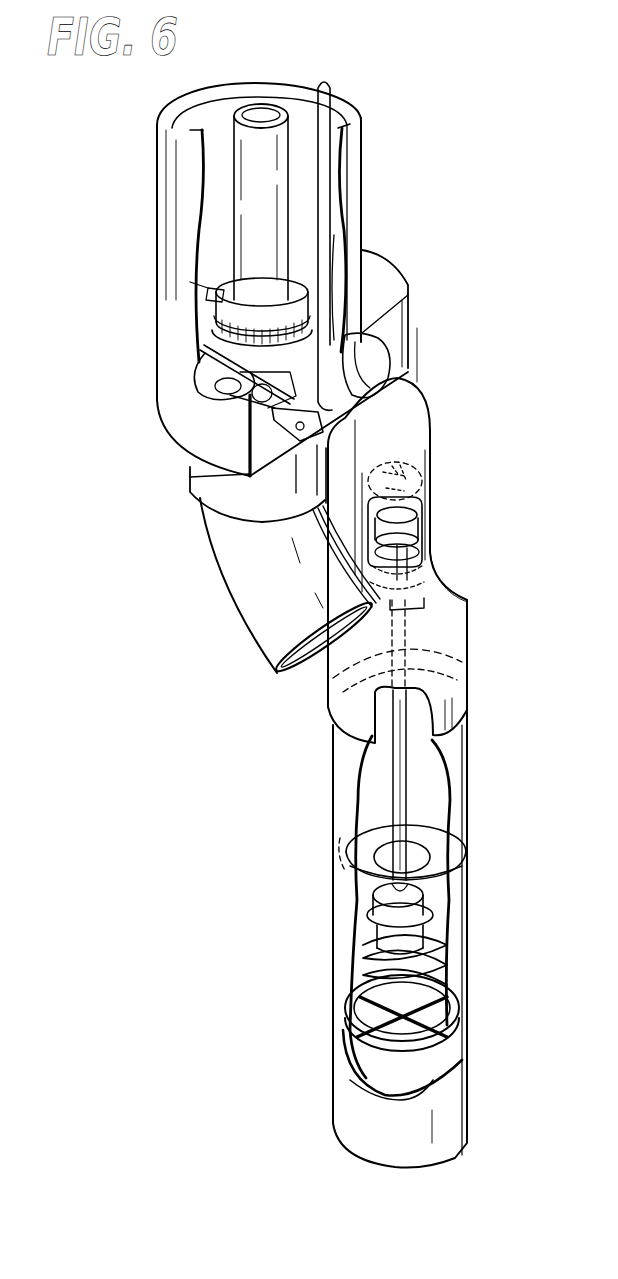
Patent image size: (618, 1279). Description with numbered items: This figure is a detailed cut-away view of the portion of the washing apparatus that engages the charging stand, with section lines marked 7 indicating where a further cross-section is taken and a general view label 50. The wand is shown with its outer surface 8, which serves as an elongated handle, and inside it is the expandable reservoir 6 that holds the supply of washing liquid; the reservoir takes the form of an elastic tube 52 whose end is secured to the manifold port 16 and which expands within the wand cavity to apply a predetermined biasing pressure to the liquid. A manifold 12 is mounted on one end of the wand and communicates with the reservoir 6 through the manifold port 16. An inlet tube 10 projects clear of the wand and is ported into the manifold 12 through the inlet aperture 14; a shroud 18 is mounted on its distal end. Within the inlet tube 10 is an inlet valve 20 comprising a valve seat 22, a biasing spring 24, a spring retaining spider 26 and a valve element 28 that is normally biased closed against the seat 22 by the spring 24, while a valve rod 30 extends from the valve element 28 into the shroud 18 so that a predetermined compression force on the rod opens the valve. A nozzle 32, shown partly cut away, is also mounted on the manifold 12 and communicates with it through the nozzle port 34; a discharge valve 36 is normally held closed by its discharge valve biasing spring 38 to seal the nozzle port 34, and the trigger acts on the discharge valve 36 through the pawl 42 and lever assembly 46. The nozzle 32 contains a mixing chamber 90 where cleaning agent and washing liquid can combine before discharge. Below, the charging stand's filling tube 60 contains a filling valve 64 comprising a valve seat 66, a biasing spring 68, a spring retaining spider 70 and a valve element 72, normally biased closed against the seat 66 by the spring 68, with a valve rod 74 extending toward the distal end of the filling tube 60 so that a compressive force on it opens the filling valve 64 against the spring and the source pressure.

The expandable reservoir 6 is at (212, 216).
The section line 7- 7 is at (457, 290).
The outer surface 8 is at (160, 180).
The inlet tube 10 is at (405, 448).
The manifold 12 is at (386, 270).
The inlet aperture 14 is at (365, 370).
The manifold port 16 is at (214, 293).
The shroud 18 is at (468, 645).
The inlet valve 20 is at (478, 553).
The valve seat 22 is at (455, 598).
The biasing spring 24 is at (428, 507).
The spring retaining spider 26 is at (420, 478).
The valve element 28 is at (420, 549).
The valve rod 30 is at (403, 606).
The nozzle 32 is at (265, 628).
The nozzle port 34 is at (245, 403).
The discharge valve 36 is at (248, 412).
The discharge valve biasing spring 38 is at (205, 383).
The pawl 42 is at (331, 95).
The lever assembly 46 is at (298, 452).
The dispenser 50 is at (617, 154).
The elastic tube 52 is at (262, 112).
The filling tube 60 is at (345, 828).
The filling valve 64 is at (503, 920).
The valve seat 66 is at (435, 855).
The biasing spring 68 is at (430, 975).
The spring retaining spider 70 is at (448, 1047).
The valve element 72 is at (382, 917).
The valve rod 74 is at (400, 806).
The mixing chamber 90 is at (209, 494).